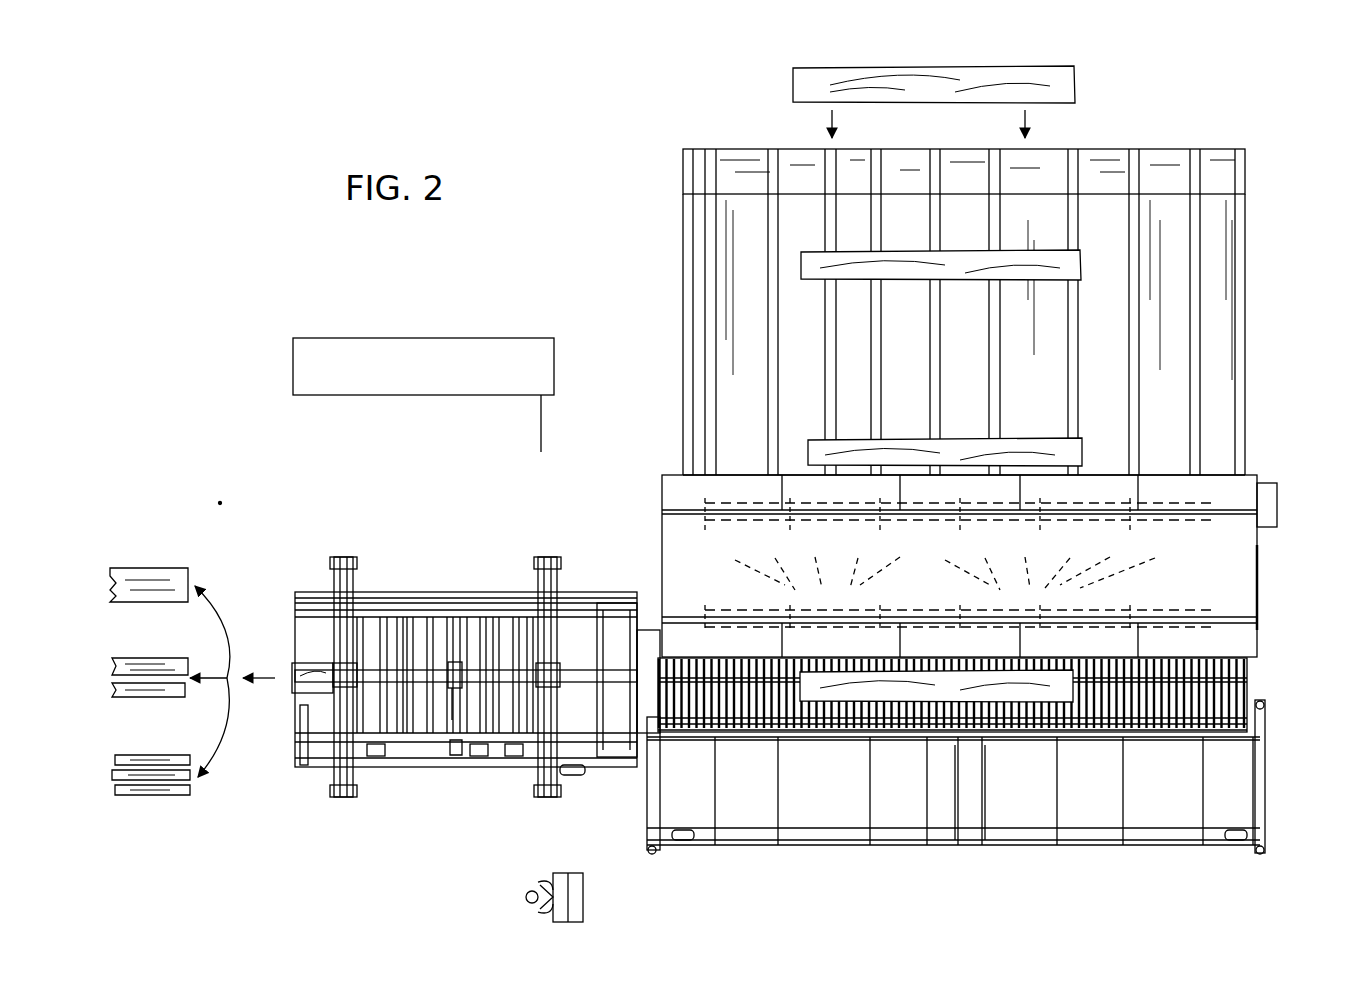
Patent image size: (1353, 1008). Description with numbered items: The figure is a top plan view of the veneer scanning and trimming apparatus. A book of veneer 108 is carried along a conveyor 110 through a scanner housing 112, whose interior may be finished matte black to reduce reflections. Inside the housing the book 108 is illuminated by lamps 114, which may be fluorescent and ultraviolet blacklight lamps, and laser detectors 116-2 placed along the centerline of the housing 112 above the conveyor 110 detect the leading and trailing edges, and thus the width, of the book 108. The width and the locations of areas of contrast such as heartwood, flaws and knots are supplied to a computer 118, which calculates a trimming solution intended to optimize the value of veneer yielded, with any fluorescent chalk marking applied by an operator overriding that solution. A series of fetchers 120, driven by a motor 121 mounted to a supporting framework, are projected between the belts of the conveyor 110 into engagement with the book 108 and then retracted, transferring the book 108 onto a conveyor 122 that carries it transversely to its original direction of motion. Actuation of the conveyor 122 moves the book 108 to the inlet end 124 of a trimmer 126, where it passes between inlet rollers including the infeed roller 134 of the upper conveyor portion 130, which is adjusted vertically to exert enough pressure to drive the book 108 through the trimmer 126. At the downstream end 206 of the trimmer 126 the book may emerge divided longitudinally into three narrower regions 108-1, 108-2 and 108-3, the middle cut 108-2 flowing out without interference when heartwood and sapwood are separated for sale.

The book of veneer 108 is at (968, 66).
The narrower region 108-1 is at (172, 655).
The middle cut 108-2 is at (105, 775).
The narrower region 108-3 is at (118, 692).
The conveyor 110 is at (673, 270).
The scanner housing 112 is at (1240, 580).
The lamps 114 is at (697, 603).
The laser detectors 116-2 is at (945, 579).
The computer 118 is at (598, 893).
The fetchers 120 is at (765, 712).
The motor 121 is at (1272, 785).
The conveyor 122 is at (1225, 683).
The inlet end 124 is at (665, 735).
The trimmer 126 is at (437, 785).
The upper conveyor portion 130 is at (457, 577).
The inlet roller 134 is at (648, 628).
The downstream end 206 is at (278, 572).